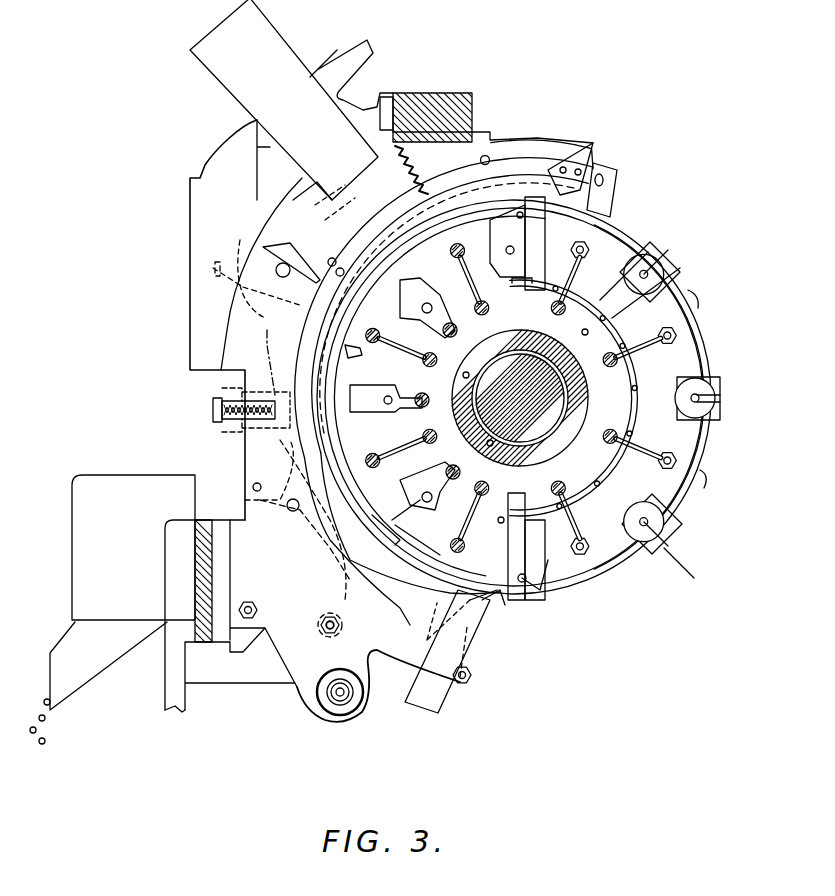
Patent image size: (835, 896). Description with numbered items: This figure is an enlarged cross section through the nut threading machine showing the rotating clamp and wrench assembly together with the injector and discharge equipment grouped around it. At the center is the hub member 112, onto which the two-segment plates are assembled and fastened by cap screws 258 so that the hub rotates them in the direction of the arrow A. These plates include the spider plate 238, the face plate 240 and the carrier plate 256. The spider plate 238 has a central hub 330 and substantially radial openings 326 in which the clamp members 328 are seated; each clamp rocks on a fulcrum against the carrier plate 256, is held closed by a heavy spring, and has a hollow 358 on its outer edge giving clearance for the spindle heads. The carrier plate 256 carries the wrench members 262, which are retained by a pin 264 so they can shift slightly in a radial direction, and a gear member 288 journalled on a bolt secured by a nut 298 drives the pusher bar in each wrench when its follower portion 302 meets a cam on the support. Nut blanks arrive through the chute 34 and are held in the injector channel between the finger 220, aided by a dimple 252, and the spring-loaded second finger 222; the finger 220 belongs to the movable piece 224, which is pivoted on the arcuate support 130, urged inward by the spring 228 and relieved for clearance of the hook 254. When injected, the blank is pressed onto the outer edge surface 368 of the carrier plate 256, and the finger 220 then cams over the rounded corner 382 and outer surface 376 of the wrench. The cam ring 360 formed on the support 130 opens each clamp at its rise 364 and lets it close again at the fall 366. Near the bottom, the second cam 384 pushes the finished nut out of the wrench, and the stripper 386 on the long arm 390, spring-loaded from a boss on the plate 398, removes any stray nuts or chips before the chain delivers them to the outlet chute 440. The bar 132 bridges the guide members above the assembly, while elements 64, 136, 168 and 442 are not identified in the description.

The chute 34 is at (357, 55).
The shaft bore 64 is at (562, 400).
The hub member 112 is at (575, 385).
The arcuate support 130 is at (308, 660).
The bar 132 is at (430, 95).
The nut 136 is at (462, 690).
The support block 168 is at (312, 90).
The finger 220 is at (430, 212).
The second finger 222 is at (395, 302).
The movable piece 224 is at (296, 220).
The spring 228 is at (470, 116).
The spider plate 238 is at (682, 490).
The face plate 240 is at (518, 600).
The dimple 252 is at (665, 548).
The hook 254 is at (332, 313).
The carrier plate 256 is at (500, 600).
The cap screws 258 is at (702, 433).
The wrench members 262 is at (428, 516).
The pin 264 is at (425, 490).
The gear member 288 is at (478, 210).
The nut 298 is at (583, 556).
The follower portion 302 is at (700, 306).
The openings 326 is at (712, 398).
The clamp members 328 is at (716, 410).
The hub 330 is at (555, 508).
The hollow 358 is at (645, 258).
The cam ring 360 is at (432, 222).
The rise 364 is at (430, 603).
The fall 366 is at (547, 198).
The outer edge surface 368 is at (487, 226).
The outer surface 376 is at (356, 585).
The rounded corner 382 is at (400, 540).
The second cam 384 is at (492, 615).
The stripper 386 is at (332, 538).
The long arm 390 is at (320, 575).
The plate 398 is at (203, 520).
The outlet chute 440 is at (80, 662).
The roller 442 is at (340, 705).
The arrow A is at (670, 228).